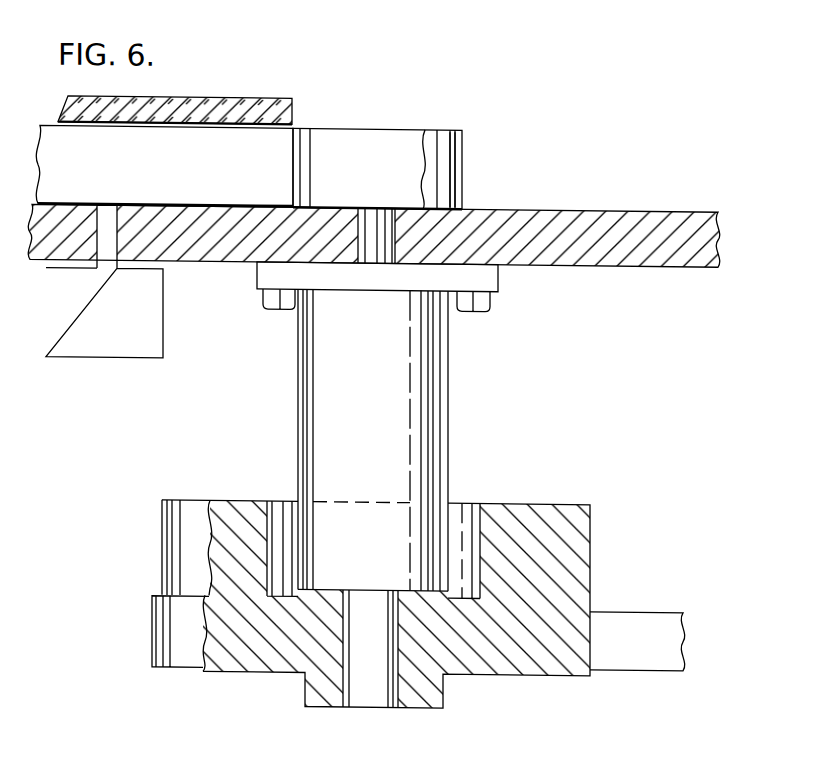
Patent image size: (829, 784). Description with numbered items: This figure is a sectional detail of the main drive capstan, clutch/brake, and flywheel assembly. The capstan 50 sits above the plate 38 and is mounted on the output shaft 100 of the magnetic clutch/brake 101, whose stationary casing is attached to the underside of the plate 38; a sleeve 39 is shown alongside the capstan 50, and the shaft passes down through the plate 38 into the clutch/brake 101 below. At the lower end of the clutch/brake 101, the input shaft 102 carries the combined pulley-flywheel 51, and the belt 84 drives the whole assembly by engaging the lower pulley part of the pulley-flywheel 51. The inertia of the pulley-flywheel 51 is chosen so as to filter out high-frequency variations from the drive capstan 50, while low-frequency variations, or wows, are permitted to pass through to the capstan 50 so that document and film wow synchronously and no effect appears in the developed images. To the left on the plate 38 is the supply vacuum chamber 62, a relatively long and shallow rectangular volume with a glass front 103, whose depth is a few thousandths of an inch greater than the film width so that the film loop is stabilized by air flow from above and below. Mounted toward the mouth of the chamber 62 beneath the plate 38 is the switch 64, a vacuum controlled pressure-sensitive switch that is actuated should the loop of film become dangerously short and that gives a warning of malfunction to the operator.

The plate 38 is at (628, 264).
The sleeve 39 is at (470, 160).
The capstan 50 is at (377, 168).
The combined pulley-flywheel 51 is at (589, 557).
The supply vacuum chamber 62 is at (164, 165).
The switch 64 is at (104, 309).
The belt 84 is at (418, 634).
The output shaft 100 is at (372, 255).
The magnetic clutch/brake 101 is at (373, 440).
The input shaft 102 is at (373, 692).
The glass front 103 is at (289, 112).